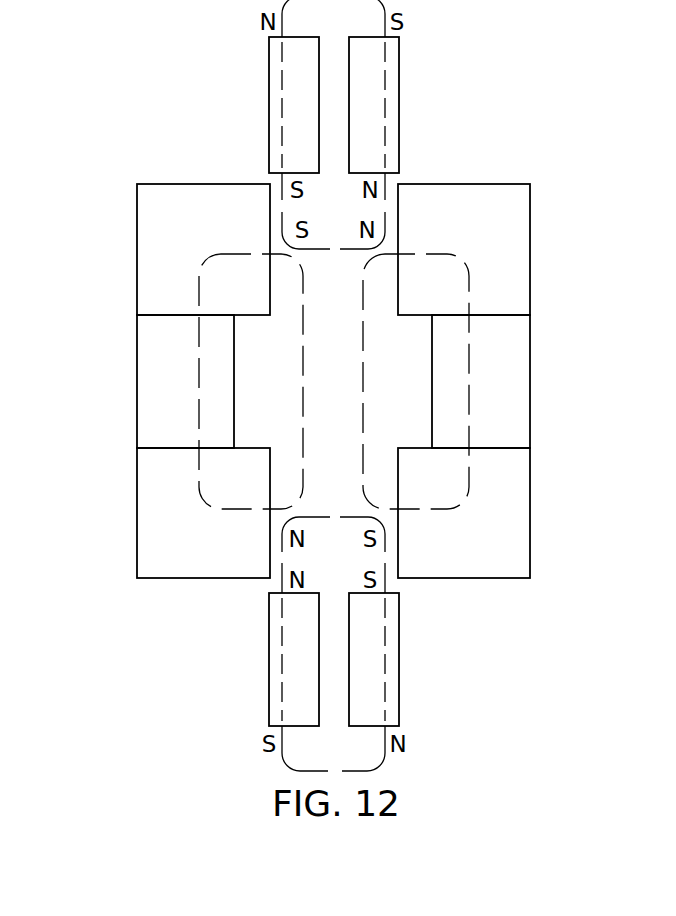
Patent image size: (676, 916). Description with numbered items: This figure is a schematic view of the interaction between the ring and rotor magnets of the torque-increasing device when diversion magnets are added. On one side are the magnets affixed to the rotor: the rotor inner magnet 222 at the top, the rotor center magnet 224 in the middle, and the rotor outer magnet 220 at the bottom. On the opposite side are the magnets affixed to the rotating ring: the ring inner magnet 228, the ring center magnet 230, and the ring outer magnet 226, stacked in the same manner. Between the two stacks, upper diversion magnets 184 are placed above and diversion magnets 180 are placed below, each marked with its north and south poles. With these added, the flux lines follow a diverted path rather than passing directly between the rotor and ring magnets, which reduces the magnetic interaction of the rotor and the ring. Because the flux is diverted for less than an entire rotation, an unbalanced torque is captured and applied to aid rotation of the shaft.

The diversion magnet 180 is at (269, 658).
The upper diversion magnet 184 is at (269, 104).
The rotor outer magnet 220 is at (512, 528).
The rotor inner magnet 222 is at (512, 240).
The rotor center magnet 224 is at (512, 384).
The ring outer magnet 226 is at (157, 528).
The ring inner magnet 228 is at (157, 240).
The ring center magnet 230 is at (157, 384).